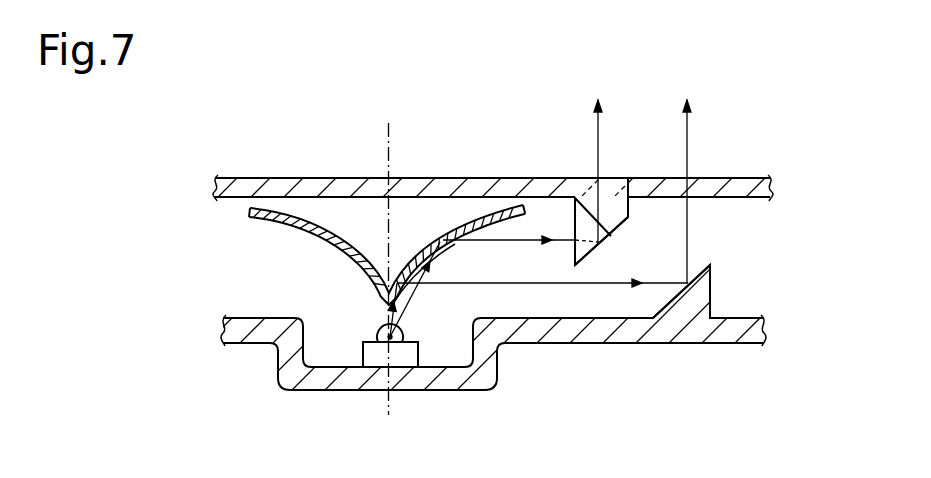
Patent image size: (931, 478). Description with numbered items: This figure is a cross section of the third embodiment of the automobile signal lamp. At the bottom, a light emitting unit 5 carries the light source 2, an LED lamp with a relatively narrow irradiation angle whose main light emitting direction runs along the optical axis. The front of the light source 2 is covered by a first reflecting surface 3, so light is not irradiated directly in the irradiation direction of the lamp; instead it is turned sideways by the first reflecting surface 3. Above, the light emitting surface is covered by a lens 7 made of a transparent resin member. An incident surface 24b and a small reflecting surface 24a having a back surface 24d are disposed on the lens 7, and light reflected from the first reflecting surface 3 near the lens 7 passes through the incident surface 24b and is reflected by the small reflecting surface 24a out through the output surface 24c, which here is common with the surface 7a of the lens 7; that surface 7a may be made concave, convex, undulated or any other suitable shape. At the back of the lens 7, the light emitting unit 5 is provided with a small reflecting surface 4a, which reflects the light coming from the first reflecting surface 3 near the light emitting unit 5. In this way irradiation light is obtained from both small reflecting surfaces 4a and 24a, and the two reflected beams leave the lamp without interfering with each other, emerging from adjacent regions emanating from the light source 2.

The lens 7 is at (437, 178).
The surface of the lens 7a is at (732, 178).
The first reflecting surface 3 is at (318, 222).
The small reflecting surface 24a is at (617, 182).
The incident surface 24b is at (573, 220).
The output surface 24c is at (585, 180).
The back surface 24d is at (608, 237).
The small reflecting surface 4a is at (710, 287).
The light emitting unit 5 is at (608, 333).
The light source 2 is at (370, 350).